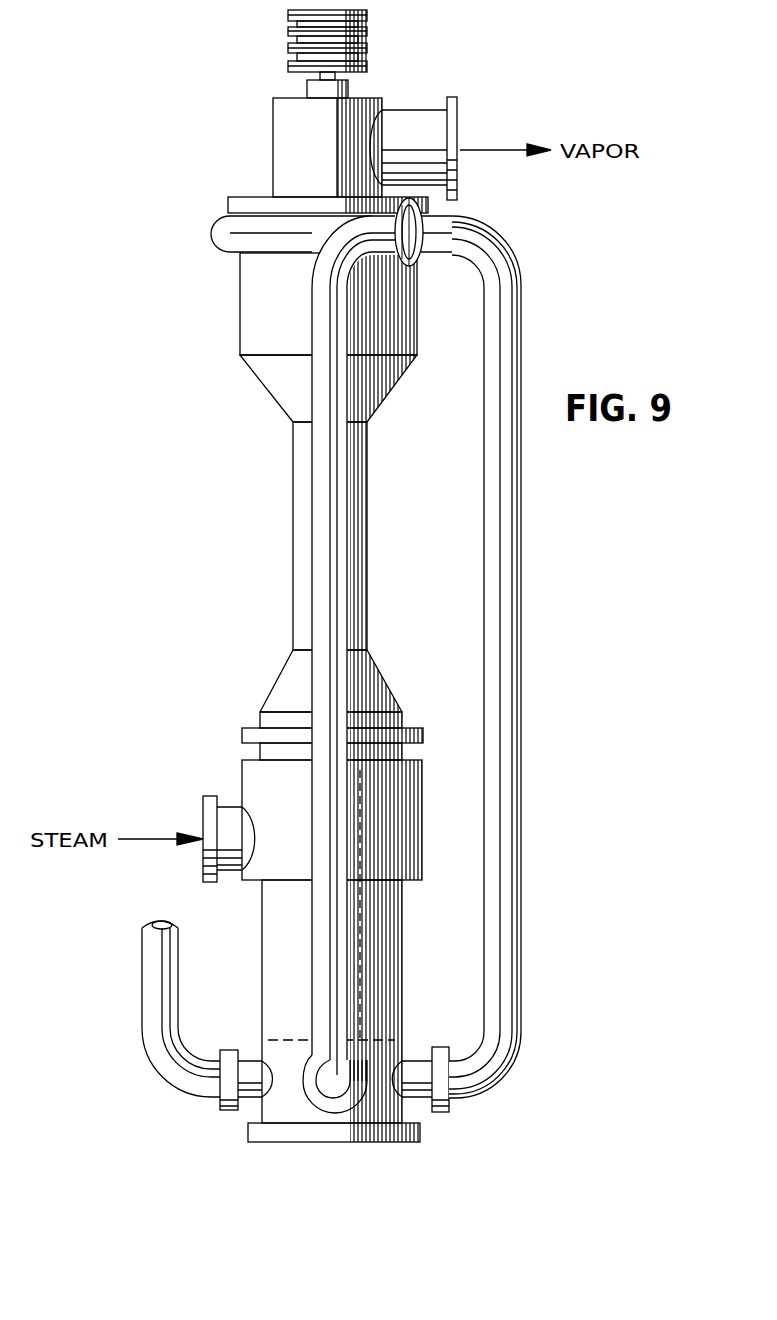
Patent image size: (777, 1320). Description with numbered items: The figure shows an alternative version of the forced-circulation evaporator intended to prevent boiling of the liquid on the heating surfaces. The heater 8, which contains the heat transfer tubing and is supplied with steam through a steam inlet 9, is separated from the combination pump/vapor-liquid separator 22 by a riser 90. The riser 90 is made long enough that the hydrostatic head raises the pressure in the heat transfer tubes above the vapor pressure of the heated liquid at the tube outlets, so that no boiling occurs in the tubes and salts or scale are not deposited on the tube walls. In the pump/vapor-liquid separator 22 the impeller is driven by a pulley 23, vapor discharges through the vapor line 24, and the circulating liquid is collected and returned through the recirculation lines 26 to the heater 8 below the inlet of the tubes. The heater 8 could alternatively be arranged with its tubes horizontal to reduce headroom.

The pulley 23 is at (290, 27).
The vapor line 24 is at (407, 115).
The pump/vapor-liquid separator 22 is at (255, 305).
The riser 90 is at (298, 510).
The recirculation line 26 is at (316, 583).
The steam inlet 9 is at (203, 818).
The heater 8 is at (268, 930).